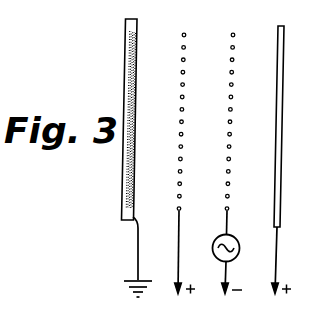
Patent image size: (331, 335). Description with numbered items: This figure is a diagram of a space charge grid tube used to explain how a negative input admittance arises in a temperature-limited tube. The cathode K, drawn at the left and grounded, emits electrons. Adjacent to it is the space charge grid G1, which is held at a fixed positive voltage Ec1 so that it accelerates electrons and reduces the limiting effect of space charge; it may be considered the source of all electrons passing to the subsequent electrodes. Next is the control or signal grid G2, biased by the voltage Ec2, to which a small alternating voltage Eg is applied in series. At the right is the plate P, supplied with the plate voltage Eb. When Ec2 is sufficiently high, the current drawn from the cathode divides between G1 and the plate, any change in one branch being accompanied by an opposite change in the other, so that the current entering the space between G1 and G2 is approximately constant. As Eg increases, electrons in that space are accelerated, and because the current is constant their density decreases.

The cathode K is at (127, 58).
The space charge grid G1 is at (186, 44).
The control grid G2 is at (237, 46).
The plate P is at (284, 47).
The alternating voltage source Eg is at (237, 253).
The space charge grid voltage Ec1 is at (184, 316).
The control grid bias voltage Ec2 is at (229, 316).
The plate voltage Eb is at (276, 316).